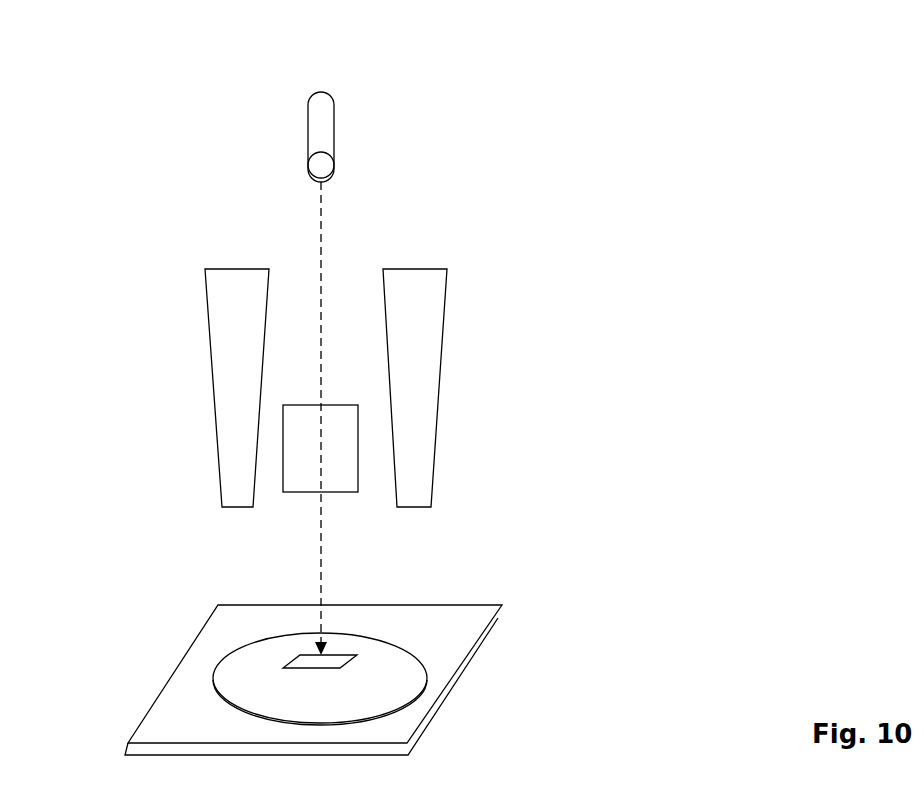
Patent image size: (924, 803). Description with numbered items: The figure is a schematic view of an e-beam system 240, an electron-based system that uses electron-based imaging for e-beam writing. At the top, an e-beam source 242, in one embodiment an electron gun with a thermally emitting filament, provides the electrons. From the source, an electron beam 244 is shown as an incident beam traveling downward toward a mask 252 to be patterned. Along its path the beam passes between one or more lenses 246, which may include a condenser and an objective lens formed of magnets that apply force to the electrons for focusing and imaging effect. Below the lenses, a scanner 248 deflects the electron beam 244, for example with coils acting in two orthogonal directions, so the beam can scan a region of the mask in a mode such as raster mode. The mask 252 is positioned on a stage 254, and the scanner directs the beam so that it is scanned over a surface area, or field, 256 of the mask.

The e-beam system 240 is at (756, 109).
The e-beam source 242 is at (321, 92).
The electron beam 244 is at (320, 231).
The lenses 246 is at (232, 455).
The scanner 248 is at (333, 467).
The mask 252 is at (359, 709).
The stage 254 is at (462, 641).
The surface area (field) 256 is at (295, 664).